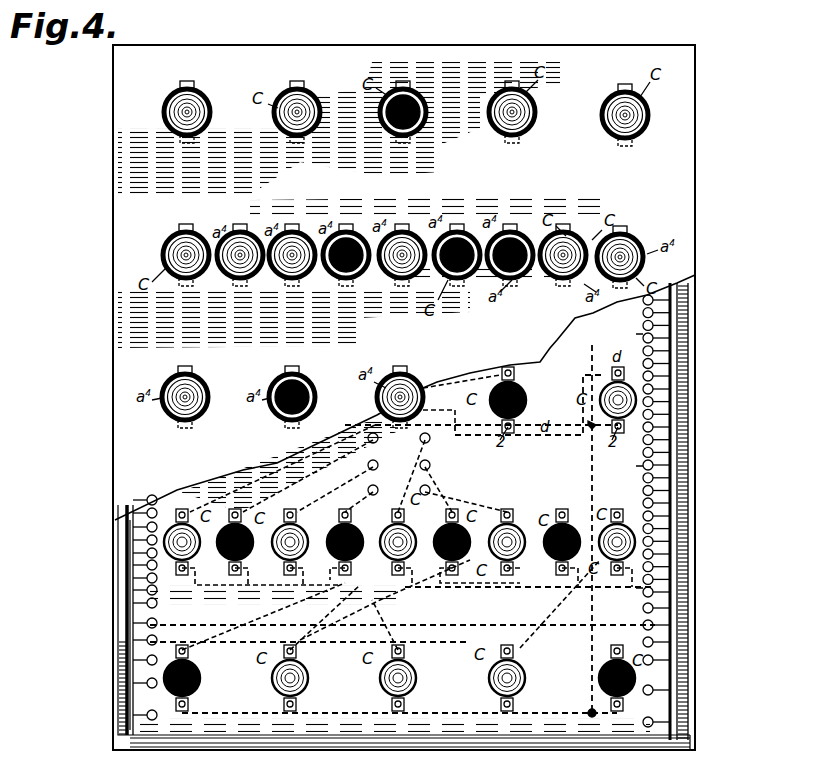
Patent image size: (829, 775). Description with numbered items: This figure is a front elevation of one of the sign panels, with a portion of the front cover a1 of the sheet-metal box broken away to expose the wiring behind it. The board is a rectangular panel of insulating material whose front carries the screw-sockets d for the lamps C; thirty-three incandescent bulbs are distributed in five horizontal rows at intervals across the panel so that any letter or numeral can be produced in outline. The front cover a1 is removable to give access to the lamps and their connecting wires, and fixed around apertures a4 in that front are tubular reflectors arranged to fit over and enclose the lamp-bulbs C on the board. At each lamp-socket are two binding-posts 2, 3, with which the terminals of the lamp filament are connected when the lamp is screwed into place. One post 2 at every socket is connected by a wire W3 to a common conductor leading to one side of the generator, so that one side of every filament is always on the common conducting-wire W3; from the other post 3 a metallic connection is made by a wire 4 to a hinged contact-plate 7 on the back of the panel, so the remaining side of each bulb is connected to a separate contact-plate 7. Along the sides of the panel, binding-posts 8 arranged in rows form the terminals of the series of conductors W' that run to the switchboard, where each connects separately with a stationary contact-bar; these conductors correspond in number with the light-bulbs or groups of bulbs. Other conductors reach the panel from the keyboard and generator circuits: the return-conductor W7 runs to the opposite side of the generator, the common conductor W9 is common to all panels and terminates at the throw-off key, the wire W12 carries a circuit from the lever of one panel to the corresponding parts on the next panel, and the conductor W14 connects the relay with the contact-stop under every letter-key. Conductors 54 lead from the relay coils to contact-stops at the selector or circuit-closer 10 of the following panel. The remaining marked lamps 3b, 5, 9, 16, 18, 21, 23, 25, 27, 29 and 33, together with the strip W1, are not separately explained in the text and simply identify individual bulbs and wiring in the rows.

The front cover a1 is at (114, 466).
The apertures a4 is at (442, 124).
The lamps C is at (165, 110).
The screw-sockets d is at (409, 542).
The binding-post 2 is at (405, 631).
The binding-post 3 is at (403, 112).
The terminal wire 3b is at (404, 571).
The wire 4 is at (391, 512).
The terminal 5 is at (145, 544).
The hinged contact-plate 7 is at (510, 255).
The binding-posts 8 is at (640, 461).
The lamp 9 is at (346, 255).
The circuit-closer 10 is at (457, 255).
The lamp 16 is at (292, 397).
The lamp 18 is at (508, 400).
The lamp 21 is at (235, 542).
The lamp 23 is at (345, 542).
The lamp 25 is at (452, 542).
The lamp 27 is at (562, 542).
The lamp 29 is at (182, 678).
The lamp 33 is at (617, 678).
The conductors 54 is at (732, 662).
The conductors W' is at (692, 510).
The terminal strip W1 is at (124, 547).
The common conducting-wire W3 is at (552, 422).
The return-conductor W7 is at (725, 77).
The common conductor W9 is at (736, 692).
The wire W12 is at (740, 722).
The conductor W14 is at (722, 642).